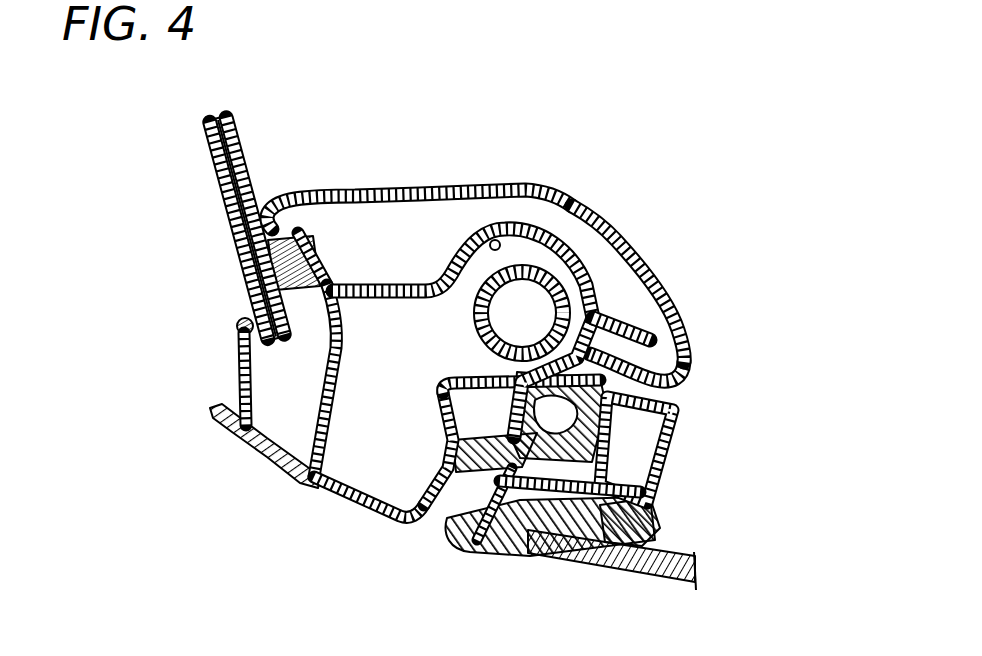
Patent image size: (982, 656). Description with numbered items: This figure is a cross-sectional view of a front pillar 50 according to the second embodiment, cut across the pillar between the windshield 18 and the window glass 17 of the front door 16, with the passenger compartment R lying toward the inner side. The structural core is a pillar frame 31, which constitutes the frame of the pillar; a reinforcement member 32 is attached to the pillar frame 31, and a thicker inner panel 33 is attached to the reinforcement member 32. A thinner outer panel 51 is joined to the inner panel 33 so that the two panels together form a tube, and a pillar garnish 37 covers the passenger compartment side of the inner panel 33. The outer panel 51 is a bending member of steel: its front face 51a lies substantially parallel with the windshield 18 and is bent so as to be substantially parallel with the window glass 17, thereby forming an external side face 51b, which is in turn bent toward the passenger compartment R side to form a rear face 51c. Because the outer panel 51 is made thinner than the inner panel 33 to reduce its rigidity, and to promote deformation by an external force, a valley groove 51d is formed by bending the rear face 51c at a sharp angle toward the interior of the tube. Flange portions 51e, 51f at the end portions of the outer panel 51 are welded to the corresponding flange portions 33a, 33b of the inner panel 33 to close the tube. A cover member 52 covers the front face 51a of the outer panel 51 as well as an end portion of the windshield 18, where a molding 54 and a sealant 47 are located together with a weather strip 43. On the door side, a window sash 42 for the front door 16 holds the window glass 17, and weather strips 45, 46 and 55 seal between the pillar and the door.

The front door 16 is at (705, 547).
The window glass 17 is at (593, 573).
The windshield 18 is at (222, 188).
The pillar frame 31 is at (487, 285).
The reinforcement member 32 is at (494, 240).
The inner panel 33 is at (390, 287).
The flange portion 33a is at (338, 238).
The flange portion 33b is at (633, 327).
The pillar garnish 37 is at (648, 262).
The window sash 42 is at (667, 467).
The weather strip 43 is at (265, 283).
The weather strip 45 is at (650, 527).
The weather strip 46 is at (604, 388).
The sealant 47 is at (257, 190).
The front pillar 50 is at (640, 223).
The outer panel 51 is at (340, 503).
The front face 51a is at (322, 375).
The external side face 51b is at (387, 513).
The rear face 51c is at (422, 520).
The valley groove 51d is at (482, 383).
The flange portion 51e is at (290, 215).
The flange portion 51f is at (683, 352).
The cover member 52 is at (230, 437).
The molding 54 is at (238, 320).
The weather strip 55 is at (442, 533).
The passenger compartment R is at (650, 128).